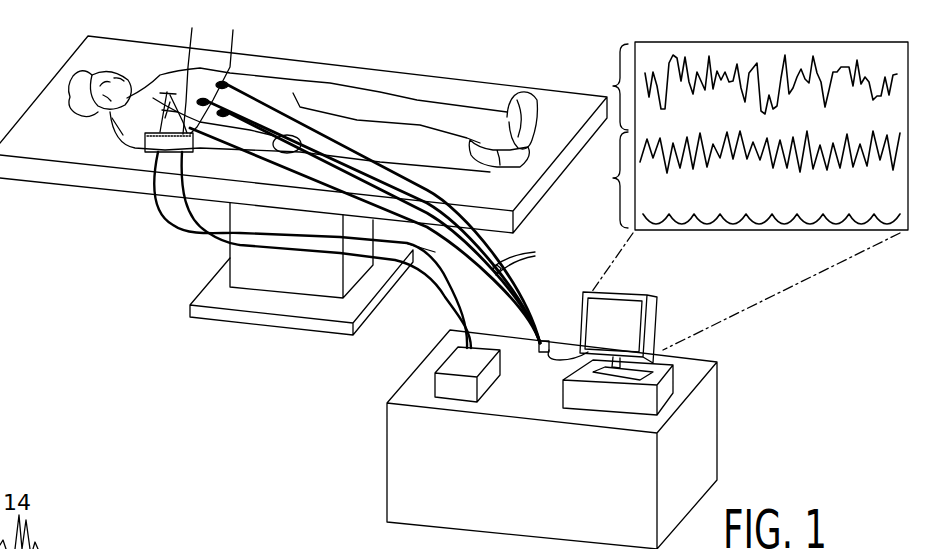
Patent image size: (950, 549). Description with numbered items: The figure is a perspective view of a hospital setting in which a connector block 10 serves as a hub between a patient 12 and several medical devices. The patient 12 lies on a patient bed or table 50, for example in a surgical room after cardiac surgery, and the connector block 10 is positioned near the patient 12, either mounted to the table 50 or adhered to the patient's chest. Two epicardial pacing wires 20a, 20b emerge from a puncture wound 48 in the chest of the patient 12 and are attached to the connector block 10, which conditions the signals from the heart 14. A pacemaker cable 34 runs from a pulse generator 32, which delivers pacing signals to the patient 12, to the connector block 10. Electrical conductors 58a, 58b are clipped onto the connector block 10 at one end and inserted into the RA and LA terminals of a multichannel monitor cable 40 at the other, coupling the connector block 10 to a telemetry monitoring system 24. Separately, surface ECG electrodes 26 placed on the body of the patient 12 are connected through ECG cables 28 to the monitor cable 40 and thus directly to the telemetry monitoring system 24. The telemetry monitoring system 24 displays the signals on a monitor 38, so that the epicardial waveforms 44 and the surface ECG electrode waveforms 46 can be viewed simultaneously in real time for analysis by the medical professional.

The connector block 10 is at (188, 157).
The patient 12 is at (400, 107).
The heart 14 is at (160, 93).
The epicardial pacing wire 20a is at (194, 68).
The epicardial pacing wire 20b is at (226, 68).
The telemetry monitoring system 24 is at (653, 380).
The surface ECG electrodes 26 is at (268, 92).
The ECG cables 28 is at (529, 255).
The pulse generator 32 is at (457, 390).
The pacemaker cable 34 is at (170, 225).
The monitor 38 is at (627, 310).
The multichannel monitor cable 40 is at (547, 340).
The epicardial waveforms 44 is at (743, 136).
The surface ECG electrode waveforms 46 is at (740, 179).
The puncture wound 48 is at (123, 135).
The patient bed or table 50 is at (42, 112).
The electrical conductor 58a is at (435, 252).
The electrical conductor 58b is at (455, 292).